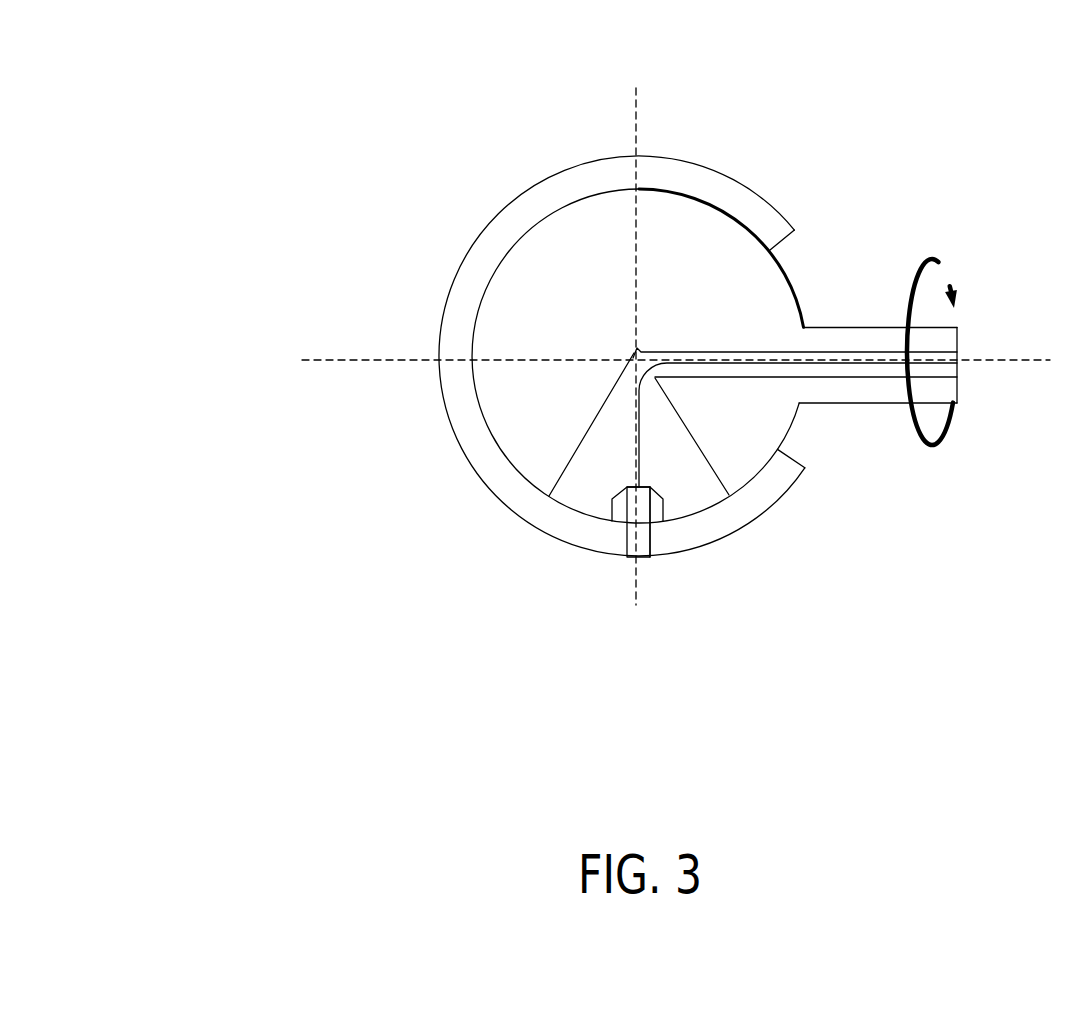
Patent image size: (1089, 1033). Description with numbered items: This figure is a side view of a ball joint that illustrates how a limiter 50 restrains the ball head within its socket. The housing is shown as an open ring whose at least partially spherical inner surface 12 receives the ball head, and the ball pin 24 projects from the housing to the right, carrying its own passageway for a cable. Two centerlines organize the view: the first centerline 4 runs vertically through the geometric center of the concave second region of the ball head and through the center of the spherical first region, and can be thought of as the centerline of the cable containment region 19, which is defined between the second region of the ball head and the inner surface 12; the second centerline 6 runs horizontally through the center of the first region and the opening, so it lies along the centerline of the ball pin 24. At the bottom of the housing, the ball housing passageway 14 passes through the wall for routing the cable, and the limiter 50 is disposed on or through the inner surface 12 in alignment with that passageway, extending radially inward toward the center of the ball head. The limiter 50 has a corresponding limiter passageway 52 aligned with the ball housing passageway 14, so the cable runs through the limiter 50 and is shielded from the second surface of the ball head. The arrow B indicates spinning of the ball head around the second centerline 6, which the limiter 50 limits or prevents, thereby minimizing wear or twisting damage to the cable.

The first centerline 4 is at (632, 113).
The second centerline 6 is at (410, 360).
The inner surface 12 is at (712, 505).
The ball housing passageway 14 is at (650, 557).
The cable containment region 19 is at (556, 496).
The ball pin 24 is at (872, 415).
The limiter 50 is at (625, 523).
The limiter passageway 52 is at (607, 527).
The arrow B is at (935, 256).